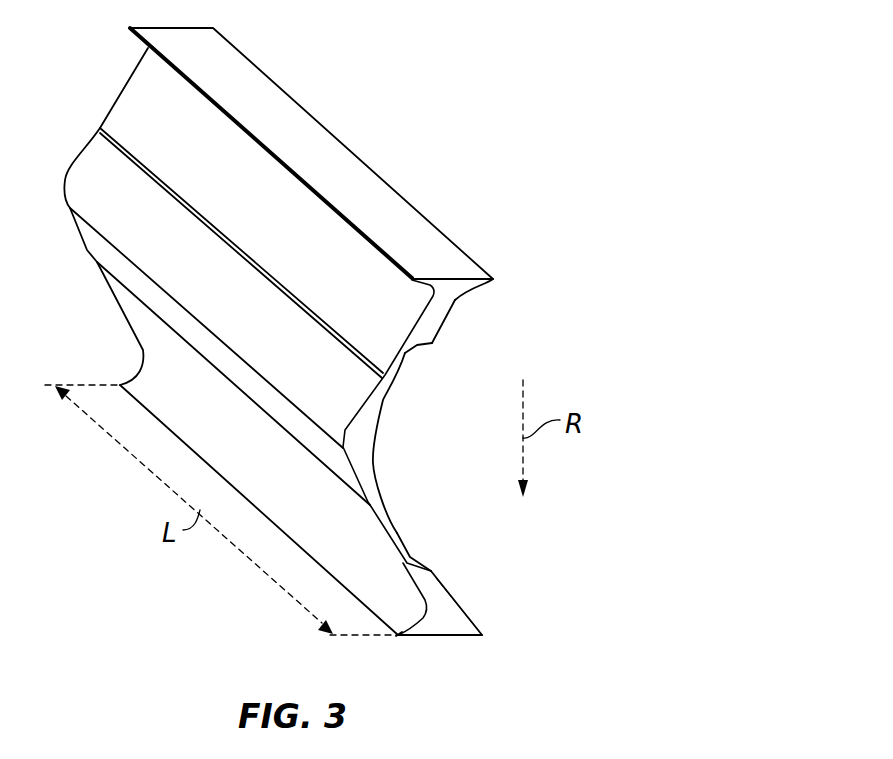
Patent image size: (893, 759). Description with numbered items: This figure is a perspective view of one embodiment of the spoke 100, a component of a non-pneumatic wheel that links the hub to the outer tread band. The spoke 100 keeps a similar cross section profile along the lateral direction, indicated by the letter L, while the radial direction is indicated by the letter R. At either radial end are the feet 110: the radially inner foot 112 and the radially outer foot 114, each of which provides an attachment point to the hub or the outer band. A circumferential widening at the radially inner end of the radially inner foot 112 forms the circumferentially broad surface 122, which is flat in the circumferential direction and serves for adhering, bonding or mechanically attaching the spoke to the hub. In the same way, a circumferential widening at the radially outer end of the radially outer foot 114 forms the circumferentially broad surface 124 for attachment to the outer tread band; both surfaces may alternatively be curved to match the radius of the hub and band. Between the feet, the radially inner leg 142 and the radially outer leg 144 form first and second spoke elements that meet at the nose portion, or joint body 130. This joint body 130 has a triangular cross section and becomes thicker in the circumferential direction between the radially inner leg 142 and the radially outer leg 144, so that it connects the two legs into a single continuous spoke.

The spoke 100 is at (506, 48).
The circumferentially broad surface 122 is at (305, 147).
The feet 110 is at (450, 287).
The radially inner foot 112 is at (440, 308).
The radially inner leg 142 is at (385, 345).
The joint body 130 is at (362, 437).
The radially outer leg 144 is at (367, 537).
The radially outer foot 114 is at (427, 588).
The circumferentially broad surface 124 is at (422, 638).